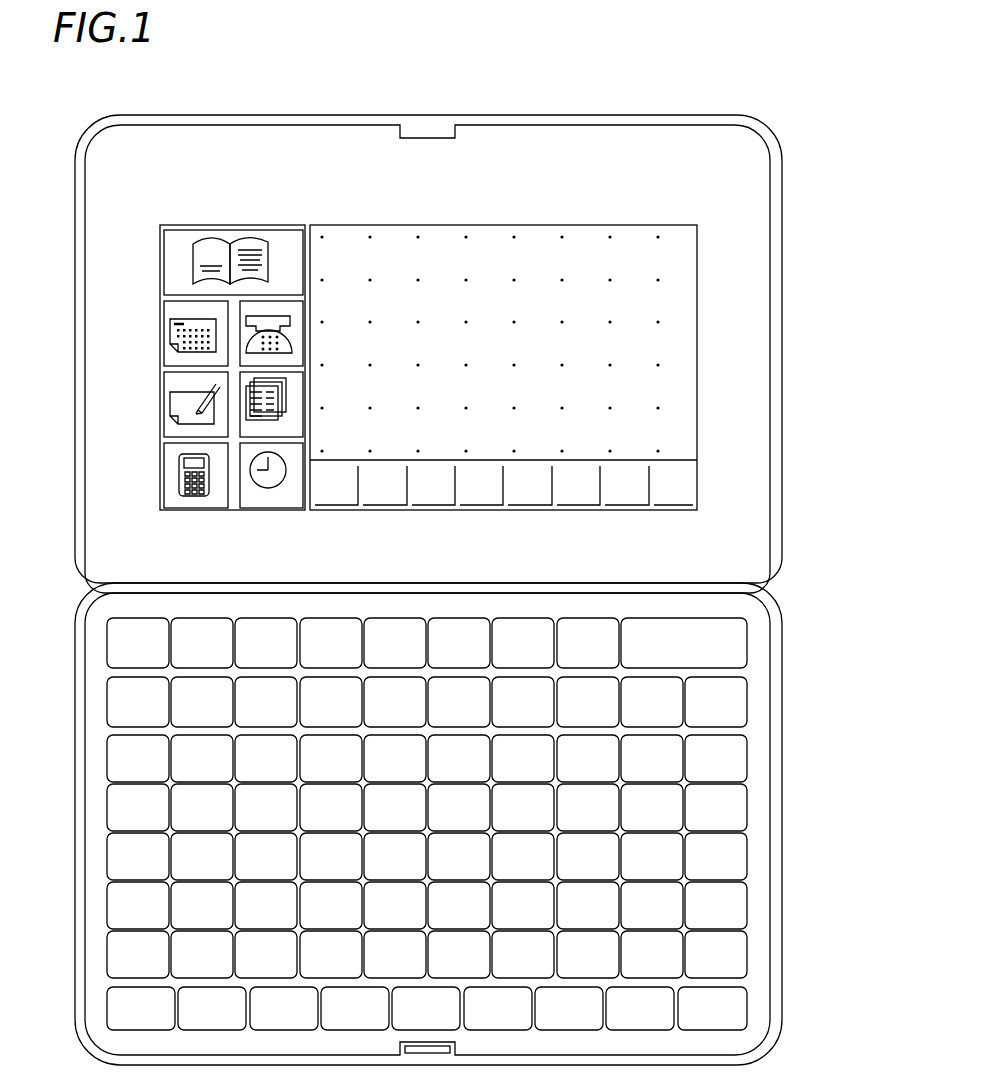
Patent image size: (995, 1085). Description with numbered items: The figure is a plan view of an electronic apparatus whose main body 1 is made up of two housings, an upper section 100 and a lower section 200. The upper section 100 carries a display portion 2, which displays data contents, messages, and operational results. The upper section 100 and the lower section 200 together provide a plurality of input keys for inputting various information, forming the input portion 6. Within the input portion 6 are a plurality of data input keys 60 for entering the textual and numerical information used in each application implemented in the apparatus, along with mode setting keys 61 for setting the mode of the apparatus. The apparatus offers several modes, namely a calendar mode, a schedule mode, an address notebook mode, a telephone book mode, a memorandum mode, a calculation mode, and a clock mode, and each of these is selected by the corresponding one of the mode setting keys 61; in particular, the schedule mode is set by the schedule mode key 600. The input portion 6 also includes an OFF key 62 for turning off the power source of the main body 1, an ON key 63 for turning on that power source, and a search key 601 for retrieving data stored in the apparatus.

The main body 1 is at (467, 590).
The upper section 100 is at (775, 180).
The lower section 200 is at (775, 960).
The display portion 2 is at (711, 318).
The schedule mode key 600 is at (157, 289).
The mode setting keys 61 is at (249, 212).
The input portion 6 is at (434, 801).
The data input keys 60 is at (738, 750).
The search key 601 is at (740, 637).
The OFF key 62 is at (190, 620).
The ON key 63 is at (113, 637).